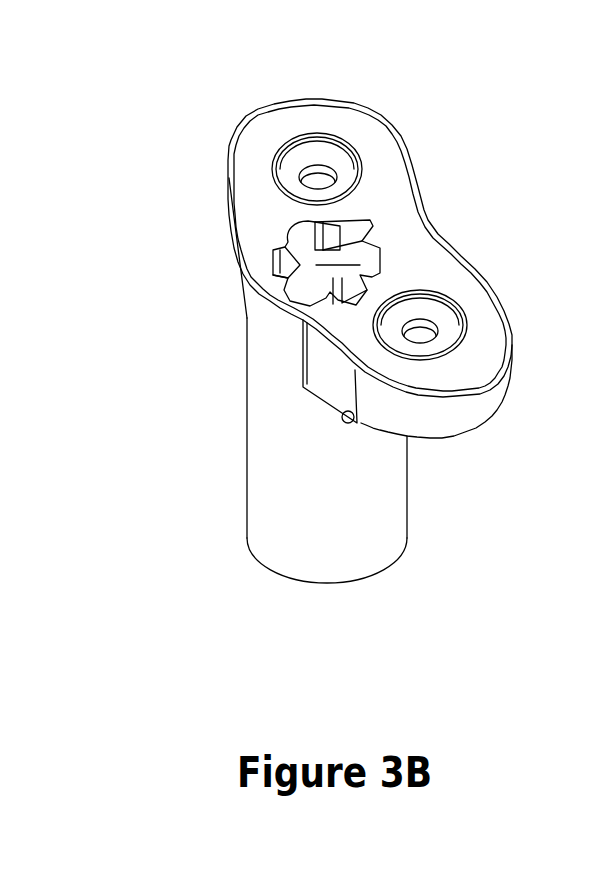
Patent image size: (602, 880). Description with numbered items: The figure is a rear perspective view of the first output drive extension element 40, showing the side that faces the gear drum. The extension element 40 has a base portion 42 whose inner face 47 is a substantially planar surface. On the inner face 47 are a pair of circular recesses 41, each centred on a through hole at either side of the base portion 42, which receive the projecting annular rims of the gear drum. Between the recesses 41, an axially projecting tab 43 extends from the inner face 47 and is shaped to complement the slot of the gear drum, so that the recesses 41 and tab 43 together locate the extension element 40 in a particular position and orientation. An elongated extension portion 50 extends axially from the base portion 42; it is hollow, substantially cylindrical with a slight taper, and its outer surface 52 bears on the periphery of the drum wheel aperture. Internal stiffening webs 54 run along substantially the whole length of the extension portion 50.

The first output drive extension element 40 is at (437, 118).
The circular recesses 41 is at (288, 178).
The base portion 42 is at (488, 402).
The axially projecting tab 43 is at (320, 254).
The inner face 47 is at (300, 120).
The elongated extension portion 50 is at (253, 467).
The outer surface 52 is at (250, 523).
The internal stiffening webs 54 is at (353, 276).